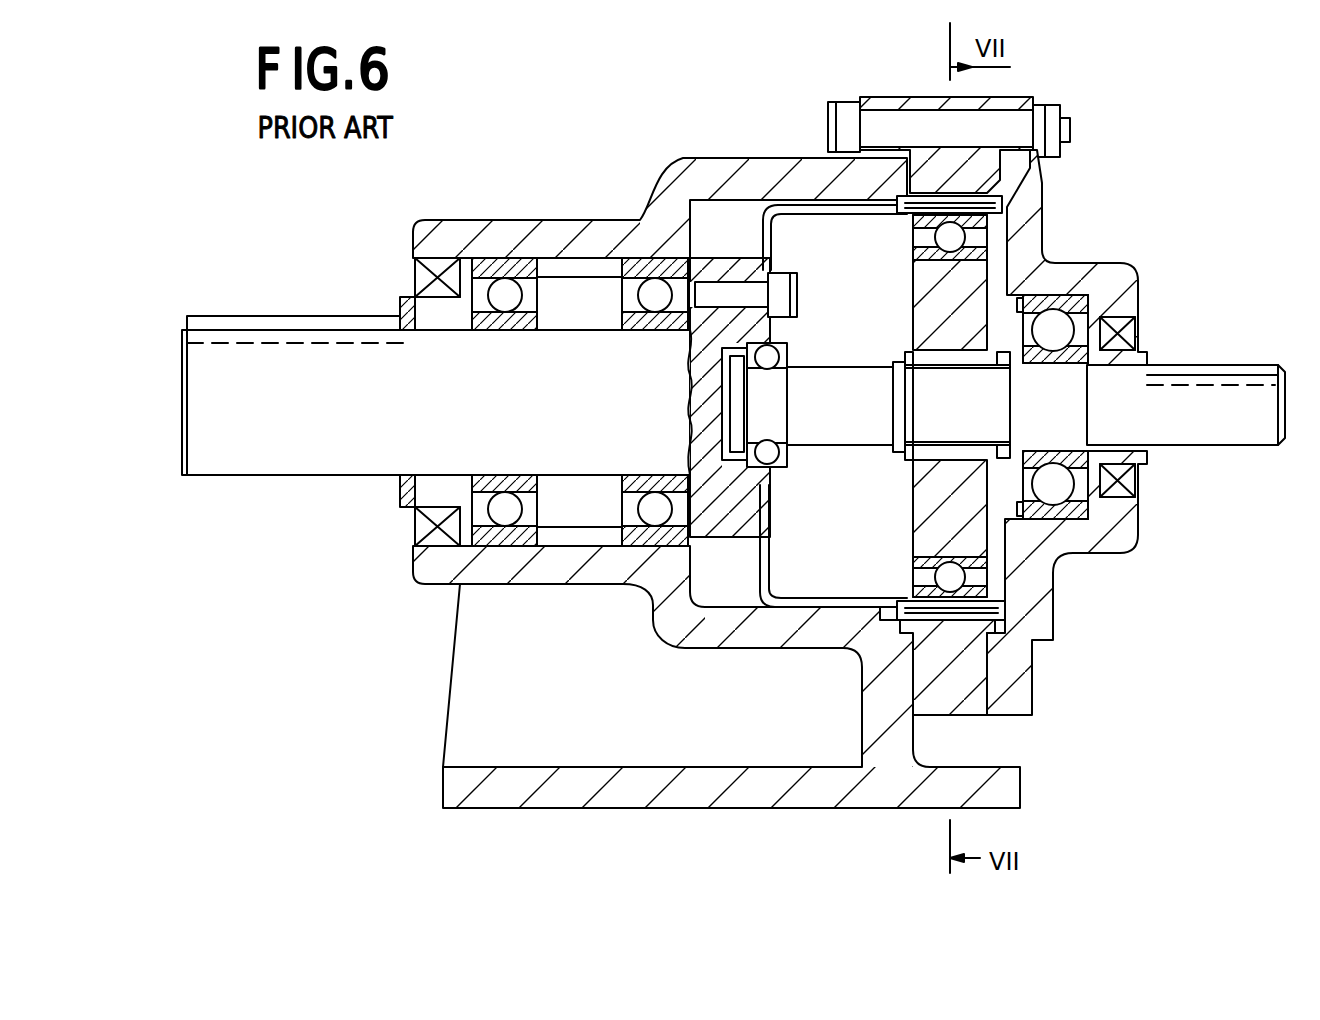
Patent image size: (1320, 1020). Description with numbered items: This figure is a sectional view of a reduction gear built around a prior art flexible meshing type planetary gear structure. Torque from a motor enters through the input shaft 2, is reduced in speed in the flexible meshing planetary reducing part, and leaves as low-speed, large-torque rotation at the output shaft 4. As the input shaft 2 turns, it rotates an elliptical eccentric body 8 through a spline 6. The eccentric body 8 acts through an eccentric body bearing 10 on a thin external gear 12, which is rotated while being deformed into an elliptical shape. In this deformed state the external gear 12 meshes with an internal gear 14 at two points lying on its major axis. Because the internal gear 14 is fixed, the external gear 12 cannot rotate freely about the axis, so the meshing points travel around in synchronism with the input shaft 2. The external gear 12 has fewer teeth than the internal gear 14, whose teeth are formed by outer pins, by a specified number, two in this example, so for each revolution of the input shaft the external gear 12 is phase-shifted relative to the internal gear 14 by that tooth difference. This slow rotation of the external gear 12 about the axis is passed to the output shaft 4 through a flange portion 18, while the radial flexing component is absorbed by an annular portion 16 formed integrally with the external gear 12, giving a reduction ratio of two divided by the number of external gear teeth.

The input shaft 2 is at (1190, 425).
The output shaft 4 is at (218, 464).
The spline 6 is at (1062, 520).
The elliptical eccentric body 8 is at (967, 522).
The eccentric body bearing 10 is at (950, 577).
The external gear 12 is at (940, 617).
The internal gear 14 is at (943, 625).
The annular portion 16 is at (800, 205).
The flange portion 18 is at (748, 243).